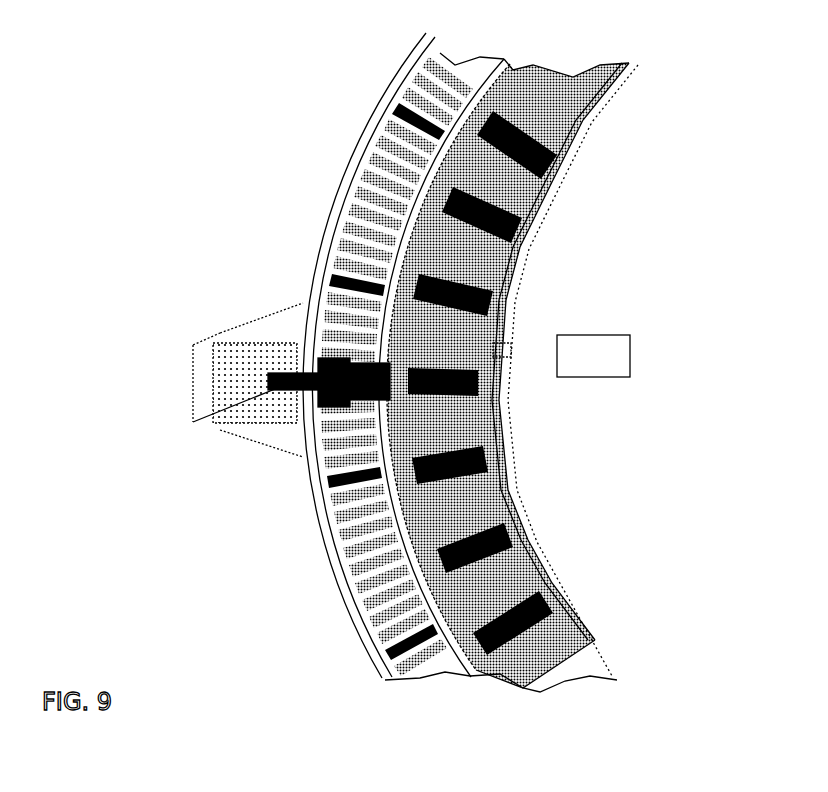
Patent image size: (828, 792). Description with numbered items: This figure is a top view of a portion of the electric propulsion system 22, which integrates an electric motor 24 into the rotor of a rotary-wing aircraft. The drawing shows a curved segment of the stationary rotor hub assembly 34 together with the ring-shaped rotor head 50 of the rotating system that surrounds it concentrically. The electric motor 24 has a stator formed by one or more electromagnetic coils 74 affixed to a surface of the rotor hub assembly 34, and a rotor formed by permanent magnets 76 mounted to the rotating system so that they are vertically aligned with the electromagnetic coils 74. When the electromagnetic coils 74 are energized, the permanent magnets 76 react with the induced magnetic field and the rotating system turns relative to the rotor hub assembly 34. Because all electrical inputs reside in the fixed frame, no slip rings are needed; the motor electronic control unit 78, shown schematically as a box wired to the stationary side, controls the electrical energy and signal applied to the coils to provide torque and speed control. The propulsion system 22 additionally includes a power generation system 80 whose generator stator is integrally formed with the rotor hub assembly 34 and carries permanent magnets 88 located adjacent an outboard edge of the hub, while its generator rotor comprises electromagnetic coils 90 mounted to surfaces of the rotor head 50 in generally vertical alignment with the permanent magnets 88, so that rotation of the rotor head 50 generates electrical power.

The electric propulsion system 22 is at (222, 83).
The electric motor 24 is at (565, 203).
The stationary rotor hub assembly 34 is at (508, 269).
The rotor head 50 is at (327, 250).
The electromagnetic coils 74 is at (495, 213).
The permanent magnets 76 is at (448, 348).
The motor electronic control unit 78 is at (512, 350).
The power generation system 80 is at (318, 204).
The permanent magnets 88 is at (397, 613).
The electromagnetic coils 90 is at (362, 280).